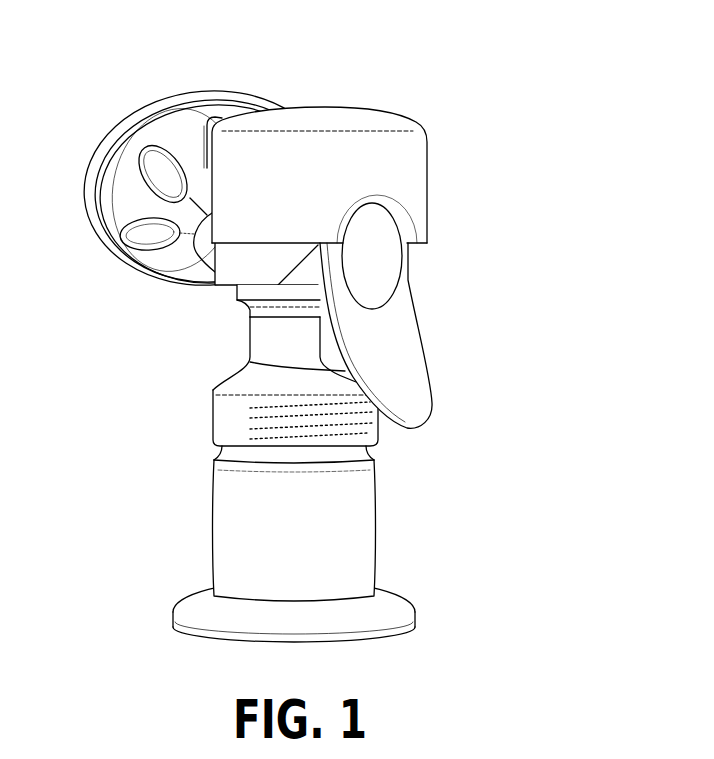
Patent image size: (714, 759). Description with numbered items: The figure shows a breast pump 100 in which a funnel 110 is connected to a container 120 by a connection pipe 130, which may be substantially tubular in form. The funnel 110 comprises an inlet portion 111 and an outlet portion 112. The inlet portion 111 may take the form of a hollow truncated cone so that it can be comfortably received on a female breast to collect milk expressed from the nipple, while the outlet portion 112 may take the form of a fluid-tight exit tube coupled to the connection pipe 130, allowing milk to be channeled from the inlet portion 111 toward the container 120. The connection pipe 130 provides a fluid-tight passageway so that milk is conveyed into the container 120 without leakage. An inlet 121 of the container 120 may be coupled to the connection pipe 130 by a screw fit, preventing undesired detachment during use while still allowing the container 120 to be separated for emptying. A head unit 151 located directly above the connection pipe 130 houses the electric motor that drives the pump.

The breast pump 100 is at (282, 321).
The funnel 110 is at (181, 159).
The inlet portion 111 is at (120, 201).
The outlet portion 112 is at (207, 246).
The connection pipe 130 is at (249, 345).
The inlet 121 is at (222, 414).
The container 120 is at (353, 525).
The head unit 151 is at (410, 170).